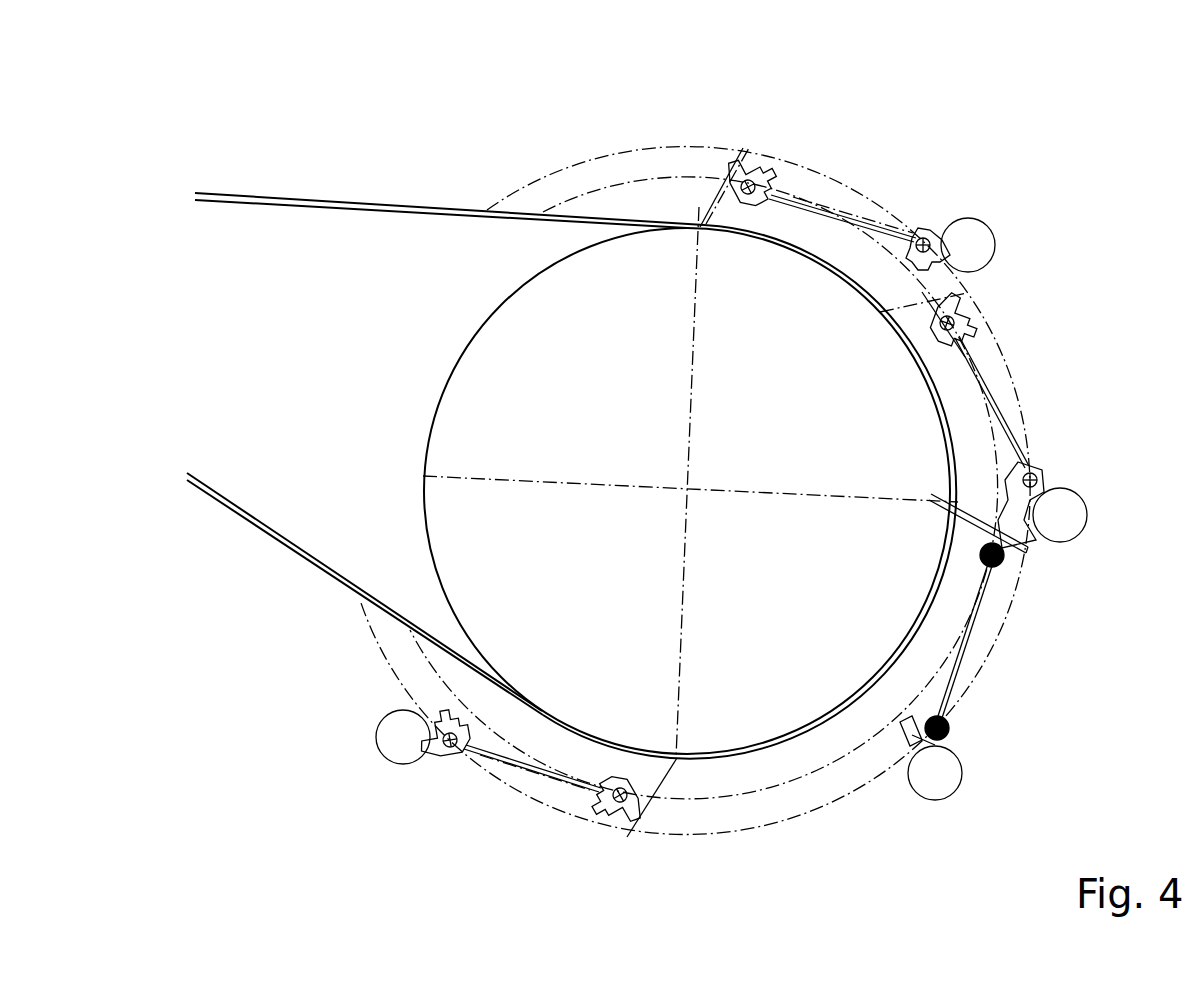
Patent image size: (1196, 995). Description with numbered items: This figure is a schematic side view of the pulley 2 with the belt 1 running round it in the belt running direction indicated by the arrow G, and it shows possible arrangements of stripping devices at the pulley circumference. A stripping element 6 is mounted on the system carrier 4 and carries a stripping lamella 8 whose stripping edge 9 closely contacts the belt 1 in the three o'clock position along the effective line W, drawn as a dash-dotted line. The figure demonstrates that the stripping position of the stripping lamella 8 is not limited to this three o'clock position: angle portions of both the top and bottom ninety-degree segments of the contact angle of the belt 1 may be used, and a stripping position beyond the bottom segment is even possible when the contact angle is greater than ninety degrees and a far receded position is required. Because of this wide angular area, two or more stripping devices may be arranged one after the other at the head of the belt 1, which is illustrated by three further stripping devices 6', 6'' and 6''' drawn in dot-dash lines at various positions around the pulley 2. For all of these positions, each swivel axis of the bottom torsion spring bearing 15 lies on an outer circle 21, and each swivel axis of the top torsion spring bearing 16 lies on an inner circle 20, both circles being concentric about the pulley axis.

The belt 1 is at (937, 388).
The pulley 2 is at (812, 330).
The system carrier 4 is at (945, 798).
The stripping element 6 is at (1027, 655).
The further stripping device 6' is at (847, 170).
The further stripping device 6'' is at (1019, 379).
The further stripping device 6''' is at (526, 819).
The stripping lamella 8 is at (1032, 505).
The stripping edge 9 is at (957, 500).
The bottom torsion spring bearing 15 is at (948, 742).
The top torsion spring bearing 16 is at (1008, 560).
The inner circle 20 is at (787, 790).
The outer circle 21 is at (842, 802).
The effective line W is at (947, 500).
The belt running direction G is at (330, 232).